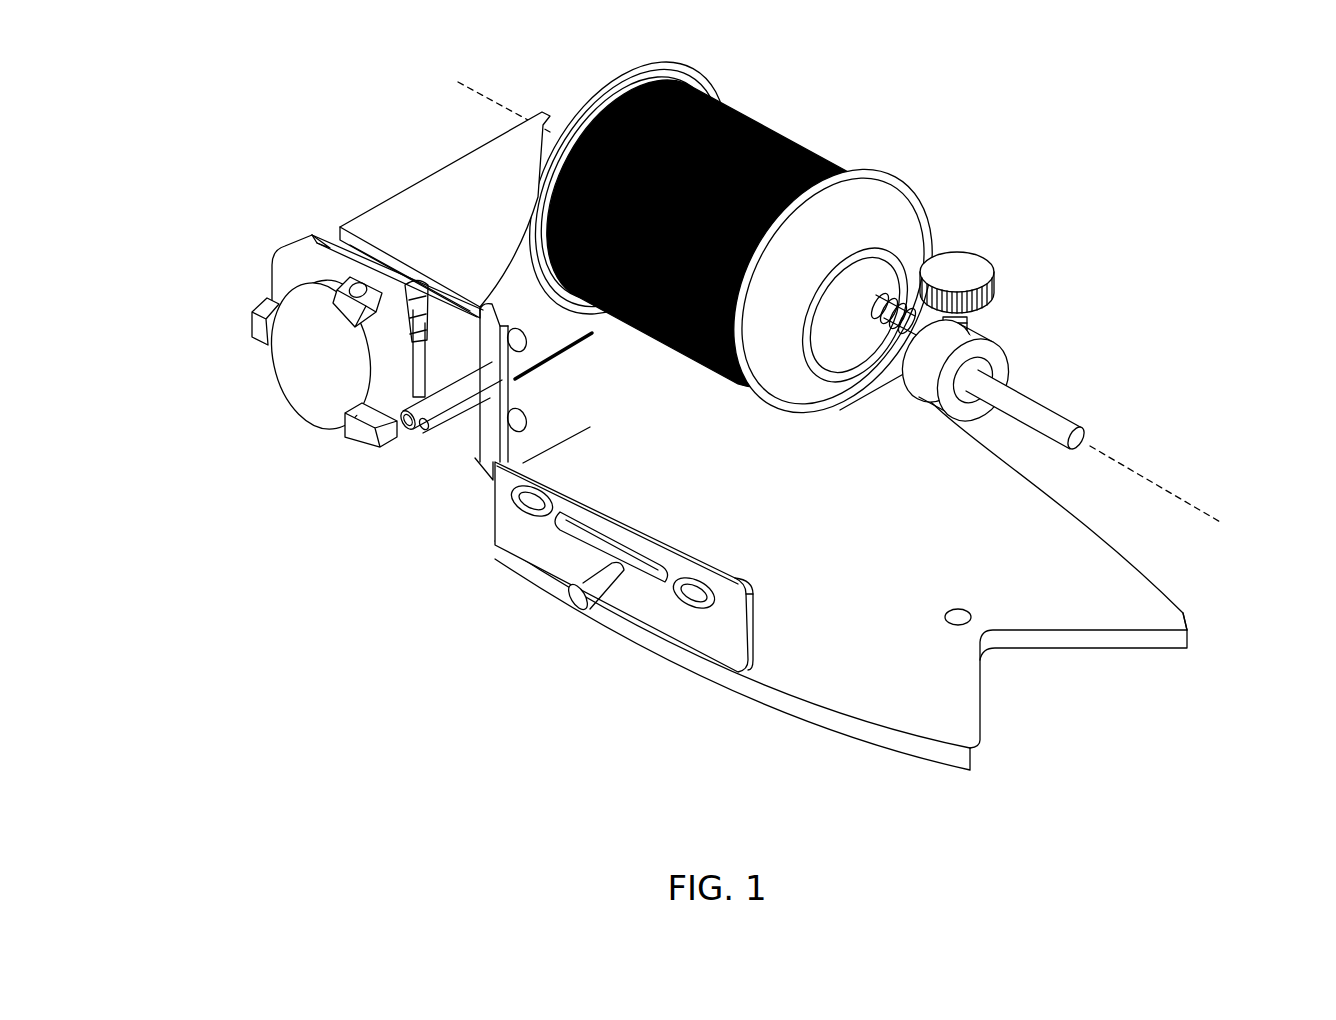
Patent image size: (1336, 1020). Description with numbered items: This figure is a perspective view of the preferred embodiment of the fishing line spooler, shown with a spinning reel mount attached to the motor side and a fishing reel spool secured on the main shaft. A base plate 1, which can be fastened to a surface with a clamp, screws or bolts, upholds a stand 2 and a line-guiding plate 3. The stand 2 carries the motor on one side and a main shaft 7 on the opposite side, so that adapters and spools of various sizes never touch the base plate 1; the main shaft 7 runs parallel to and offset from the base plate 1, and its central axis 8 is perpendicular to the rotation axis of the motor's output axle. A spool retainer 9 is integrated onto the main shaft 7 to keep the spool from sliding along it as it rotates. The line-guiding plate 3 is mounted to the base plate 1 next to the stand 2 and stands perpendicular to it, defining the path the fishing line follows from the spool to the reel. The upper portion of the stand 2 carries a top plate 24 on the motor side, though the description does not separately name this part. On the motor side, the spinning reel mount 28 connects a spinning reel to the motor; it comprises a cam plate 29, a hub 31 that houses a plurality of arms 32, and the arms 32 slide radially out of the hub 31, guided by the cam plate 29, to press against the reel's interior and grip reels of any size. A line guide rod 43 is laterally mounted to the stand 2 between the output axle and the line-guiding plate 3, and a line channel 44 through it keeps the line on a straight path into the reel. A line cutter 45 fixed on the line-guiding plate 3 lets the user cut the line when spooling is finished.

The base plate 1 is at (1160, 612).
The stand 2 is at (607, 96).
The line-guiding plate 3 is at (497, 523).
The main shaft 7 is at (1035, 398).
The central axis 8 is at (1180, 498).
The spool retainer 9 is at (1022, 337).
The top plate 24 is at (470, 160).
The spinning reel mount 28 is at (243, 367).
The cam plate 29 is at (315, 235).
The hub 31 is at (283, 380).
The plurality of arms 32 is at (265, 303).
The line guide rod 43 is at (442, 413).
The line channel 44 is at (425, 432).
The line cutter 45 is at (577, 609).